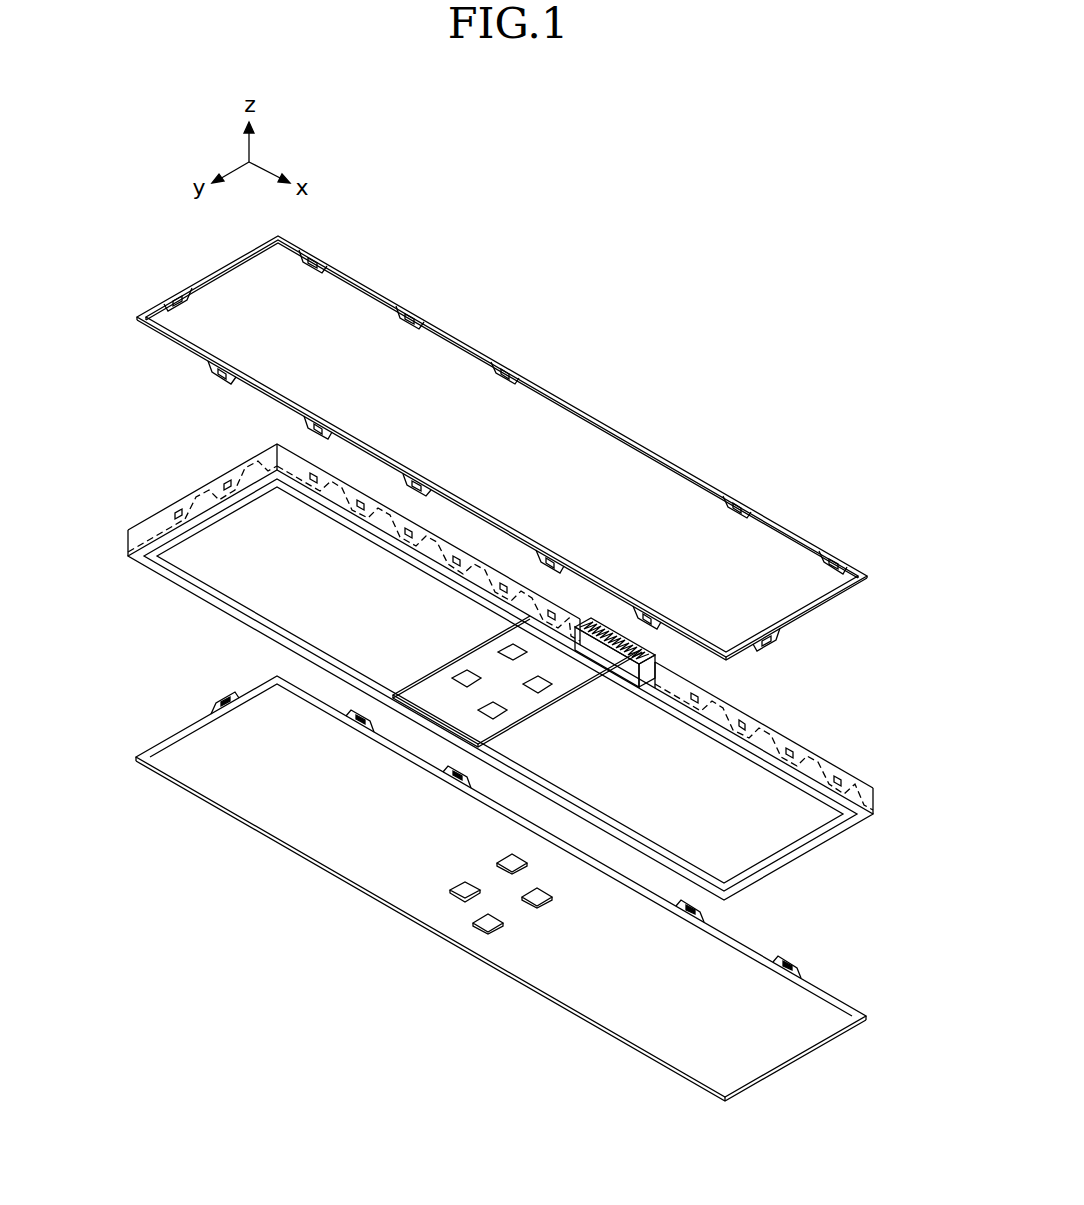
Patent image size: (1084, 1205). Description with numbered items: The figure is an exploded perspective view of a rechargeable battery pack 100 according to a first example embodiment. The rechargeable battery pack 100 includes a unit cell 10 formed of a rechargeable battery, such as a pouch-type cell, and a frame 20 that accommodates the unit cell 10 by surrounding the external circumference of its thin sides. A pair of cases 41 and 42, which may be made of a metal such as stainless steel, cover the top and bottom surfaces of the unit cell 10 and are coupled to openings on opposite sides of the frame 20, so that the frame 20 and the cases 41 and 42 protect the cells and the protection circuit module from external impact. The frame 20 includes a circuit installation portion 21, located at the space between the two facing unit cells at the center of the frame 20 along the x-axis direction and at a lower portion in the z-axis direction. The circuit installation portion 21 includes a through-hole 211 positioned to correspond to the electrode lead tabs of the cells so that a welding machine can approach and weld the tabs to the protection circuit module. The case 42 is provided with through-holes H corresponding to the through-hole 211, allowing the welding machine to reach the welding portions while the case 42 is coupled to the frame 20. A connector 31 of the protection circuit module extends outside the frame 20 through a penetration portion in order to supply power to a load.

The rechargeable battery pack 100 is at (480, 182).
The case 41 is at (650, 438).
The frame 20 is at (822, 744).
The unit cell 10 is at (753, 838).
The connector 31 is at (625, 638).
The circuit installation portion 21 is at (423, 698).
The through-hole 211 is at (452, 678).
The case 42 is at (835, 985).
The through-holes H is at (463, 893).